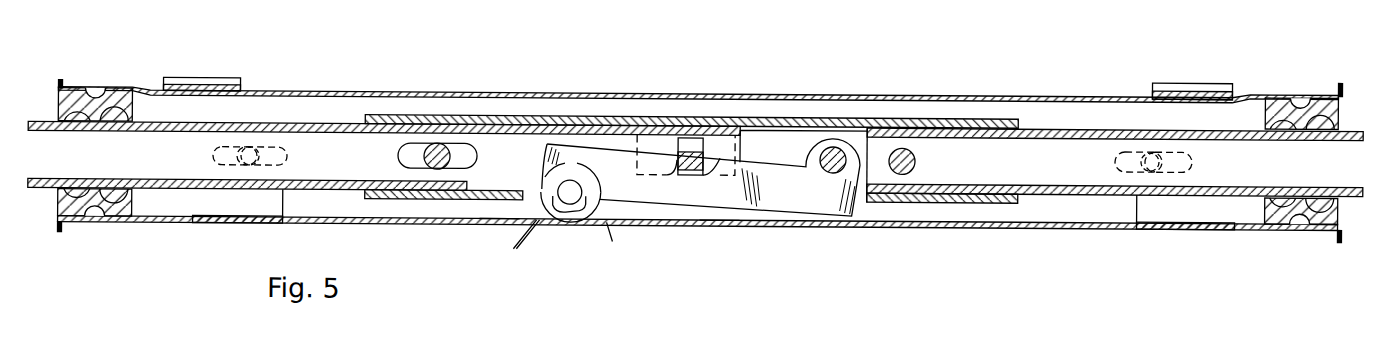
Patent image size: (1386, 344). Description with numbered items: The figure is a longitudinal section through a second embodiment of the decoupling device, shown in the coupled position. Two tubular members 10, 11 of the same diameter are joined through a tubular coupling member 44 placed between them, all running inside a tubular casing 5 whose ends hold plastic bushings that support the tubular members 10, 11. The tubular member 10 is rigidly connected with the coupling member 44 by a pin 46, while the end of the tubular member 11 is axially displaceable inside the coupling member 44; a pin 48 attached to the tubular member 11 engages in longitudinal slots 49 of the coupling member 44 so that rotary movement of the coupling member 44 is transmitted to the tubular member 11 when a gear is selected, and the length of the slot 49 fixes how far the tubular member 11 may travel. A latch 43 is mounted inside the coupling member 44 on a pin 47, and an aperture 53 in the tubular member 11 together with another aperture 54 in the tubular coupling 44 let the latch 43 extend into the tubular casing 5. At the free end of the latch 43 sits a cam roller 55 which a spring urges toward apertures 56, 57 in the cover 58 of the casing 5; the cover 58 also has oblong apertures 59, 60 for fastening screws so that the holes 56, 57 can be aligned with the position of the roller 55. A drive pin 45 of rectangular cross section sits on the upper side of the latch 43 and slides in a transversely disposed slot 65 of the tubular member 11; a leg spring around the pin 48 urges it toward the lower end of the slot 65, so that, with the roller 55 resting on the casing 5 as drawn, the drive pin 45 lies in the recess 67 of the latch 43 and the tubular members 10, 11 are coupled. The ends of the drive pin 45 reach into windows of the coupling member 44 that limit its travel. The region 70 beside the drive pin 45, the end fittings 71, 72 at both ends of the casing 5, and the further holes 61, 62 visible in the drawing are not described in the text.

The tubular casing 5 is at (310, 95).
The tubular member 10 is at (1053, 188).
The tubular member 11 is at (170, 186).
The latch 43 is at (770, 192).
The tubular coupling member 44 is at (767, 118).
The drive pin 45 is at (695, 158).
The pin 46 is at (902, 160).
The pin 47 is at (833, 159).
The pin 48 is at (435, 150).
The longitudinal slot 49 is at (458, 150).
The aperture 53 is at (505, 191).
The aperture 54 is at (532, 196).
The cam roller 55 is at (568, 213).
The aperture 56 is at (495, 223).
The aperture 57 is at (638, 228).
The cover 58 is at (720, 227).
The oblong aperture 59 is at (272, 151).
The oblong aperture 60 is at (1123, 154).
The hole 61 is at (250, 151).
The hole 62 is at (1150, 154).
The transversely disposed slot 65 is at (684, 140).
The recess 67 is at (680, 177).
The housing 70 is at (720, 140).
The right end fitting 71 is at (1275, 101).
The left end fitting 72 is at (70, 102).